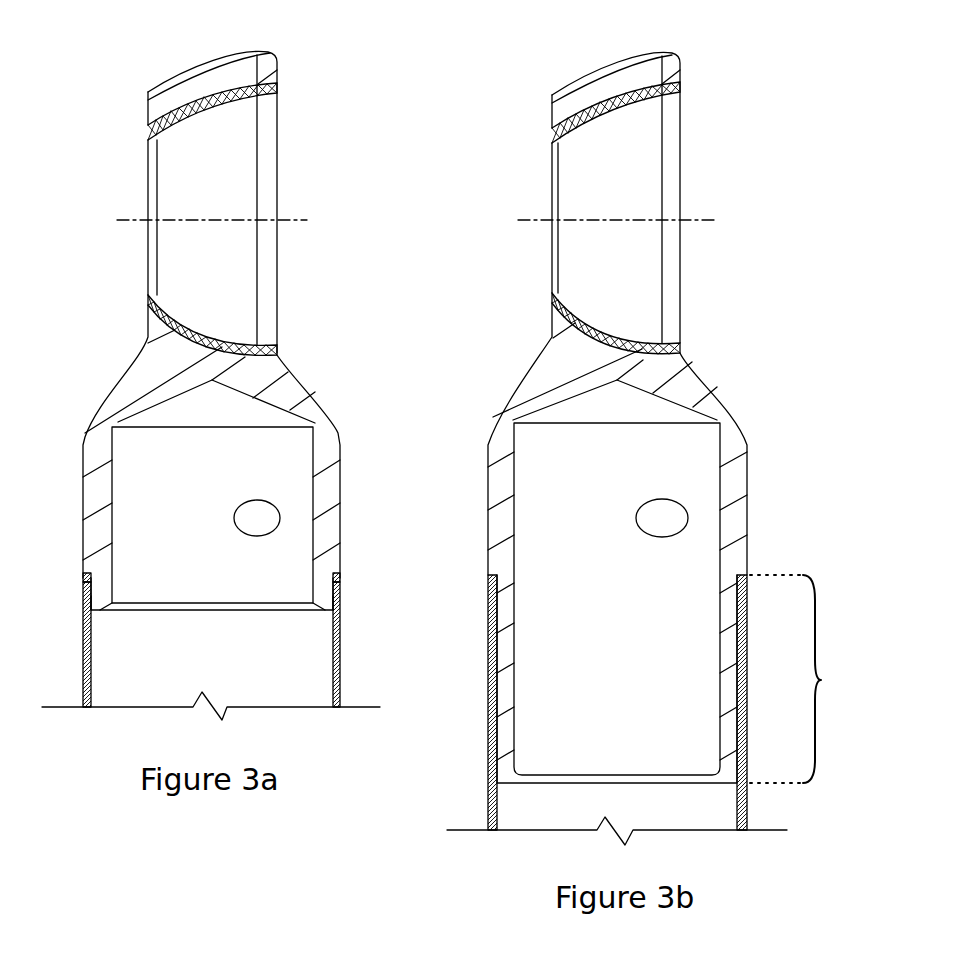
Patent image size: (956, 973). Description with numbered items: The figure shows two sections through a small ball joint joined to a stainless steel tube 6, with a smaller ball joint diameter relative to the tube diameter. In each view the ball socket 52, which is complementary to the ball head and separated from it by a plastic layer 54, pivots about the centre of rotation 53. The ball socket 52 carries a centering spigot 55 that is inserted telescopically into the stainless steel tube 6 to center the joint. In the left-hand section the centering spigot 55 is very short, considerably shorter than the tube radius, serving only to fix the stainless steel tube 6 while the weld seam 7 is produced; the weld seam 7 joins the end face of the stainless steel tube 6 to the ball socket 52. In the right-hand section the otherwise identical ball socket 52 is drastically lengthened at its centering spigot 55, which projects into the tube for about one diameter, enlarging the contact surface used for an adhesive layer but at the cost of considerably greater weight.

In FIG. 3A, the ball socket 52 is at (185, 88).
In FIG. 3B, the ball socket 52 is at (590, 85).
In FIG. 3A, the centre of rotation 53 is at (262, 212).
In FIG. 3B, the centre of rotation 53 is at (650, 211).
In FIG. 3A, the plastic layer 54 is at (162, 128).
In FIG. 3B, the plastic layer 54 is at (560, 135).
In FIG. 3A, the centering spigot 55 is at (100, 602).
In FIG. 3B, the centering spigot 55 is at (809, 679).
In FIG. 3A, the stainless steel tube 6 is at (83, 645).
In FIG. 3B, the stainless steel tube 6 is at (490, 643).
In FIG. 3A, the weld seam 7 is at (82, 578).